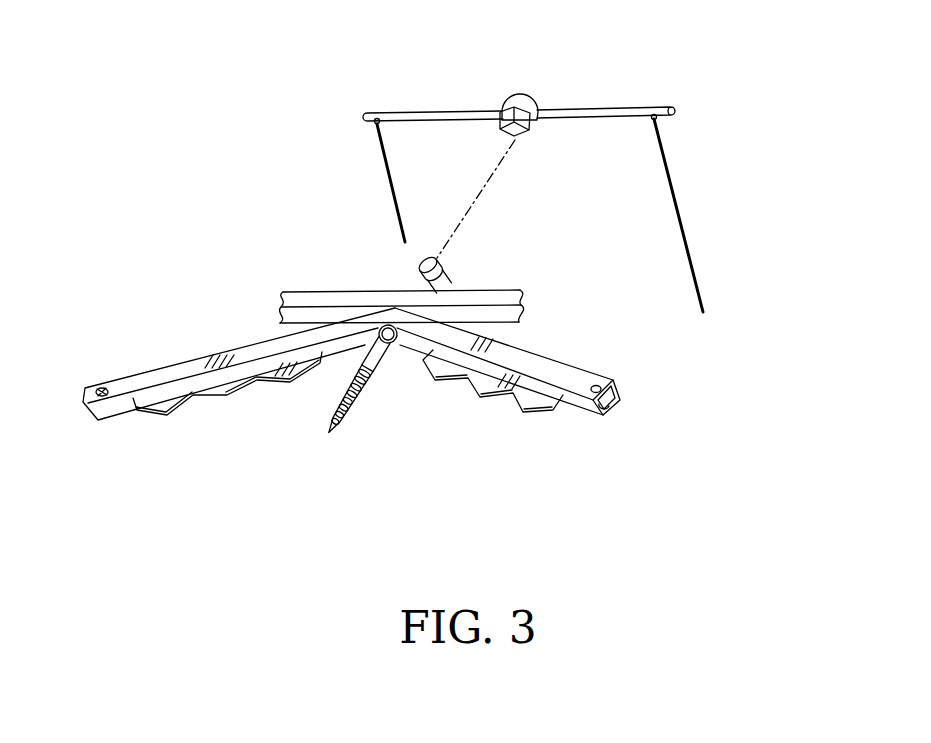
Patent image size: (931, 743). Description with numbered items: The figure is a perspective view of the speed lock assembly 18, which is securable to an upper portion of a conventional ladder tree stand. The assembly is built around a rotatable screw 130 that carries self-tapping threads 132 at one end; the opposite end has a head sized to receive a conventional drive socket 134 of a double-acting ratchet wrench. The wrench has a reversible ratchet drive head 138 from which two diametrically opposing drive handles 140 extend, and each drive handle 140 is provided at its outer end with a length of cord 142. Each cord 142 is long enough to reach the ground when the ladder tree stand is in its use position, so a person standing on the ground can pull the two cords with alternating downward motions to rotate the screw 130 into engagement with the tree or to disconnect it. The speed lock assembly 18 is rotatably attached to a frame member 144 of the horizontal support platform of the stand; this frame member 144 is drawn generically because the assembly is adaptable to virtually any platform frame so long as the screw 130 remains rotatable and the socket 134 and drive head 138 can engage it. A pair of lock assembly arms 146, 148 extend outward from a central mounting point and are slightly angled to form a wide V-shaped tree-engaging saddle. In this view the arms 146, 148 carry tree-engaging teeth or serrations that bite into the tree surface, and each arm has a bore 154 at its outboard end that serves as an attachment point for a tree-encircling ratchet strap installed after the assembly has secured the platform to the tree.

The speed lock assembly 18 is at (740, 345).
The rotatable screw 130 is at (396, 416).
The self-tapping threads 132 is at (347, 420).
The drive socket 134 is at (440, 272).
The reversible ratchet drive head 138 is at (527, 91).
The drive handles 140 is at (405, 110).
The cord 142 is at (385, 161).
The frame member 144 is at (497, 298).
The lock assembly arm 146 is at (177, 370).
The lock assembly arm 148 is at (565, 360).
The bore 154 is at (102, 388).